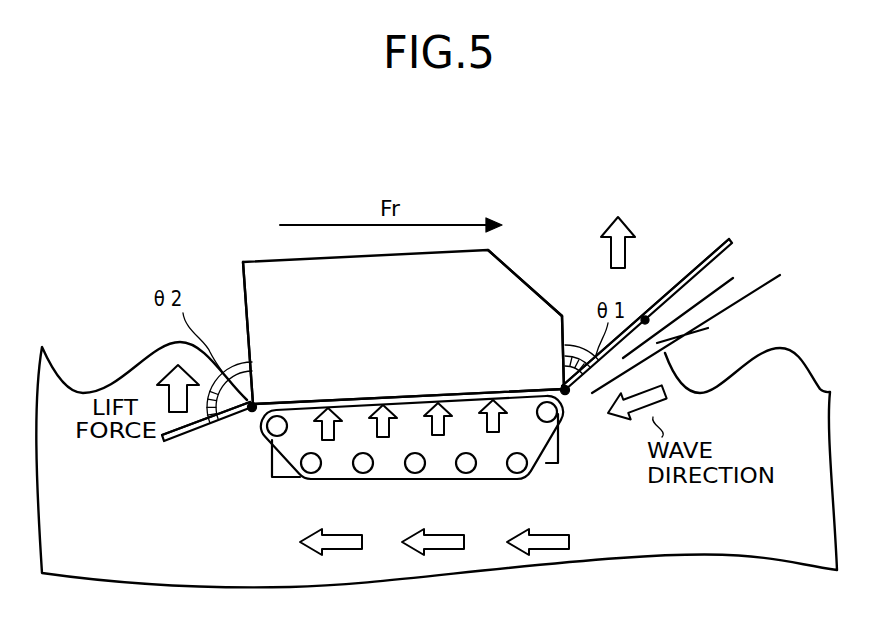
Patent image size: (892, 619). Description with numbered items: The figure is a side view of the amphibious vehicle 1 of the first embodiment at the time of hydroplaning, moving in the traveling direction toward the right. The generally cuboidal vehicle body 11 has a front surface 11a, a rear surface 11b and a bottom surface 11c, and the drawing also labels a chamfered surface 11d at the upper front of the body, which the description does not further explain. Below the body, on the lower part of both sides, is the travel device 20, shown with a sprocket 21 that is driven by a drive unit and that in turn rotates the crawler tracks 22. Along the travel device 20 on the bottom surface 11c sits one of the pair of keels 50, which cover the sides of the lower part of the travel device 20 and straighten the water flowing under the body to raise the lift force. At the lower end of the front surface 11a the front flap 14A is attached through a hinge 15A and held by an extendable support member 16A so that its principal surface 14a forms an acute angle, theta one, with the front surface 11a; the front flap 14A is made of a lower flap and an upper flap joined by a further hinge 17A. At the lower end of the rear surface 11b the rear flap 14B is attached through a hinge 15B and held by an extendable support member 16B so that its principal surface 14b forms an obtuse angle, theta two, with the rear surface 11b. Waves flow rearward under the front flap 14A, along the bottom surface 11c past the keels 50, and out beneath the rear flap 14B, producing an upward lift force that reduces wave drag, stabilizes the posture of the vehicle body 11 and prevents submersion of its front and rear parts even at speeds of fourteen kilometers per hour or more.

The amphibious vehicle 1 is at (356, 172).
The vehicle body 11 is at (251, 258).
The front surface 11a is at (560, 318).
The rear surface 11b is at (241, 278).
The bottom surface 11c is at (410, 398).
The inclined upper face of float 11d is at (515, 262).
The front flap 14A is at (735, 245).
The principal surface 14a is at (705, 265).
The rear flap 14B is at (162, 442).
The principal surface 14b is at (172, 432).
The hinge 15A is at (567, 393).
The hinge 15B is at (253, 410).
The extendable support member 16A is at (575, 348).
The extendable support member 16B is at (243, 373).
The hinge 17A is at (645, 320).
The travel device 20 is at (497, 483).
The sprocket 21 is at (547, 412).
The crawler tracks 22 is at (383, 482).
The keels 50 is at (557, 457).